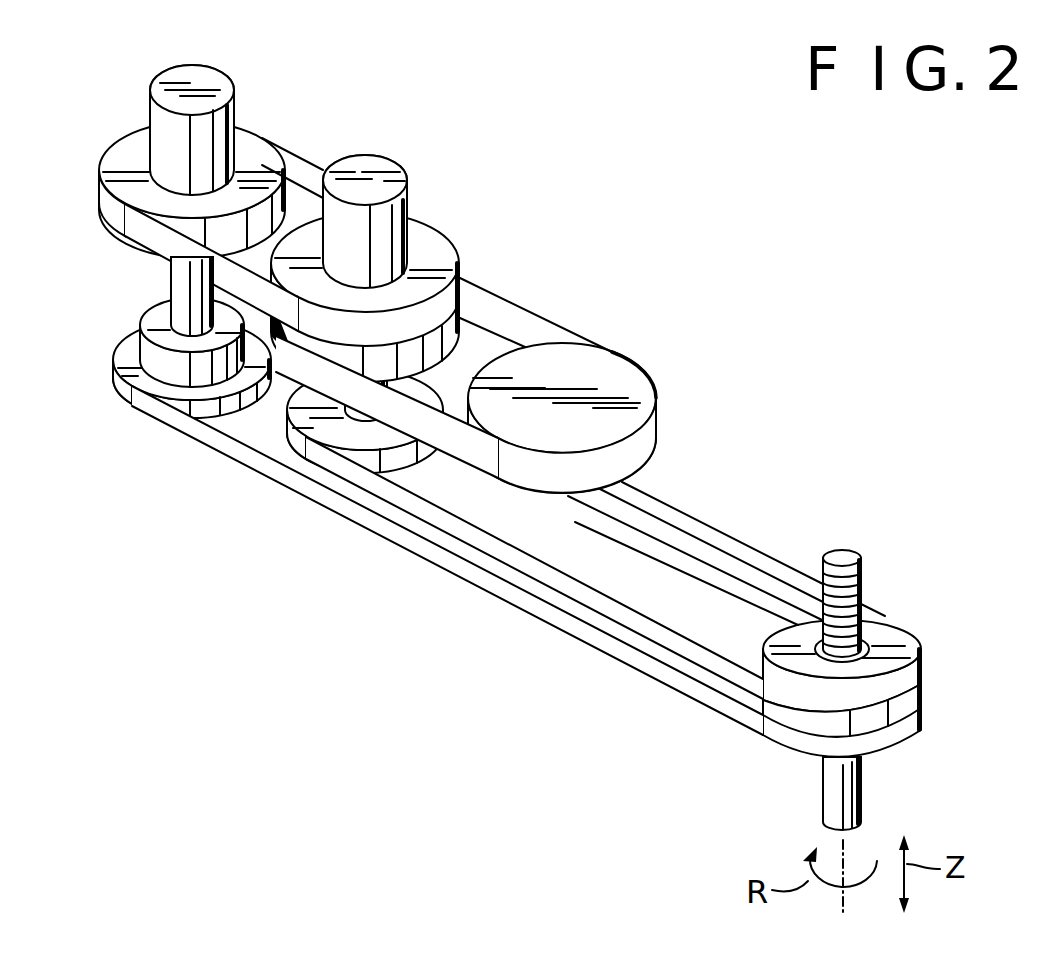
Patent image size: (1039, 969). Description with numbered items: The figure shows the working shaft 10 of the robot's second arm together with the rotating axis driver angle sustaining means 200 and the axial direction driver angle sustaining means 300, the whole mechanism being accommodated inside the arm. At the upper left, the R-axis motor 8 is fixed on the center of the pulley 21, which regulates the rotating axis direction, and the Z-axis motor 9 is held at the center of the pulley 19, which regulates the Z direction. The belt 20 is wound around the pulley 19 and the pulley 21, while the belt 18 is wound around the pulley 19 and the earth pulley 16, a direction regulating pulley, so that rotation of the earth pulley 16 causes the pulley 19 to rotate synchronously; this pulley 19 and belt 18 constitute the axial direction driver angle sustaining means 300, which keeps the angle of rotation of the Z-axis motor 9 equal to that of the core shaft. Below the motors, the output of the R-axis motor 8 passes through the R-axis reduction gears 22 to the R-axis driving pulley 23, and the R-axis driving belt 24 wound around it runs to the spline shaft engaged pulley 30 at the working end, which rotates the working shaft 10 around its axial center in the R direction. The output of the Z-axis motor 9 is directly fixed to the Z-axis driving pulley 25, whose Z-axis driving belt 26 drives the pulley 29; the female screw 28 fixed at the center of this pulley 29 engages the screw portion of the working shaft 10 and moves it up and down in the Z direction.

The R-axis motor 8 is at (213, 76).
The Z-axis motor 9 is at (386, 165).
The working shaft 10 is at (863, 788).
The earth pulley 16 is at (611, 375).
The belt 18 is at (530, 325).
The pulley 19 is at (450, 244).
The belt 20 is at (306, 162).
The pulley 21 is at (122, 157).
The R-axis reduction gears 22 is at (152, 323).
The R-axis driving pulley 23 is at (122, 358).
The R-axis driving belt 24 is at (467, 577).
The Z-axis driving pulley 25 is at (290, 440).
The Z-axis driving belt 26 is at (706, 535).
The female screw 28 is at (866, 648).
The female screw pulley 29 is at (922, 655).
The spline shaft engaged pulley 30 is at (922, 724).
The rotating axis driver angle sustaining means 200 is at (576, 206).
The axial direction driver angle sustaining means 300 is at (735, 350).